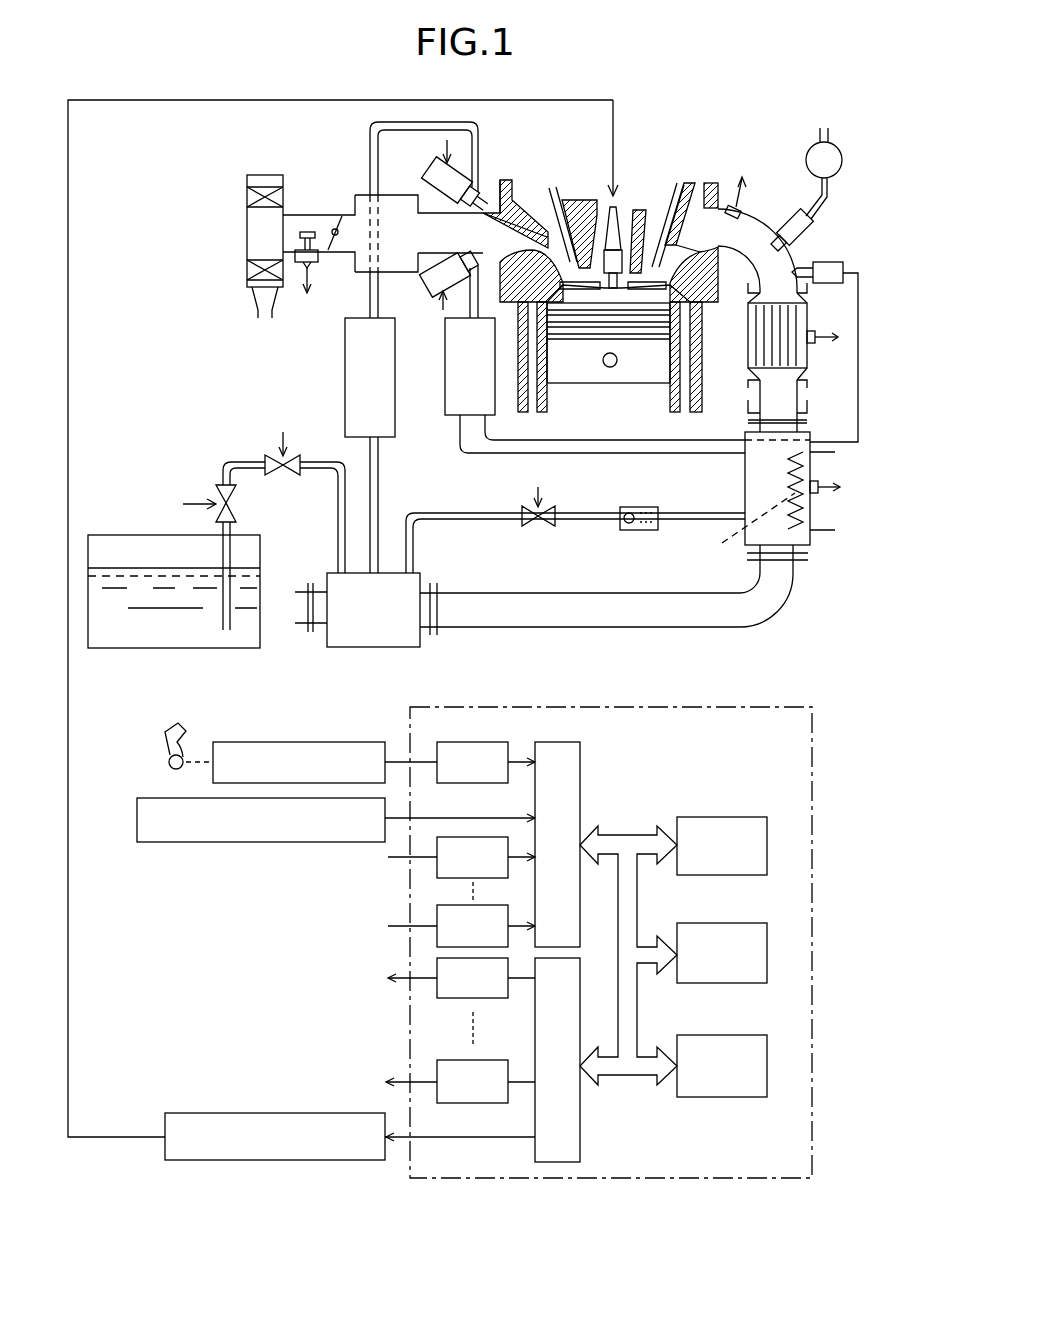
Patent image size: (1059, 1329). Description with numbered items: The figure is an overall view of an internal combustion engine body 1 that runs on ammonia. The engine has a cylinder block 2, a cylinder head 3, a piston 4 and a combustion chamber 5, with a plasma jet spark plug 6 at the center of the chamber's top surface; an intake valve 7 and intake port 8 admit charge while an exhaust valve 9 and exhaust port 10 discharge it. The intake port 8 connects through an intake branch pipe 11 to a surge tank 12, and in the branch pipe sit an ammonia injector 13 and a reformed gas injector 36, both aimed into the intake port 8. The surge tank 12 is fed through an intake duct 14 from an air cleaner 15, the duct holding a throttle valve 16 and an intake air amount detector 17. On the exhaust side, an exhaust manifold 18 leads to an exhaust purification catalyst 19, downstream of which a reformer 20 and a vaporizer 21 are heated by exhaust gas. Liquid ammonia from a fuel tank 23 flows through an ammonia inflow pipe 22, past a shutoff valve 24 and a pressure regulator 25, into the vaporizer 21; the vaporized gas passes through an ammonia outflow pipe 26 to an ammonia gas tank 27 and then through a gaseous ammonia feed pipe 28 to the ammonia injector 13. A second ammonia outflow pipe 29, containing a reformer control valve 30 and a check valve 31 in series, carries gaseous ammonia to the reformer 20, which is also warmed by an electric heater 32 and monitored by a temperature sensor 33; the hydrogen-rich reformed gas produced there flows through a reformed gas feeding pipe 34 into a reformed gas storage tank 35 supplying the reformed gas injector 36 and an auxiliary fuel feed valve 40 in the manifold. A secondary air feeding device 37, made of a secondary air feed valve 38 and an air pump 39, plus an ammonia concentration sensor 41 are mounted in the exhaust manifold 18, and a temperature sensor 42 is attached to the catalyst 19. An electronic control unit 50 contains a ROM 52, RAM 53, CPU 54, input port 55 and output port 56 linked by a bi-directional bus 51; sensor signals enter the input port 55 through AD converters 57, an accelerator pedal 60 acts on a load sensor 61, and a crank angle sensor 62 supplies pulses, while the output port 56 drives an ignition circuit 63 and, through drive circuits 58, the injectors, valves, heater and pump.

The internal combustion engine body 1 is at (493, 186).
The cylinder block 2 is at (697, 357).
The cylinder head 3 is at (706, 272).
The piston 4 is at (570, 375).
The combustion chamber 5 is at (628, 302).
The plasma jet spark plug 6 is at (619, 240).
The intake valve 7 is at (566, 240).
The intake port 8 is at (522, 232).
The exhaust valve 9 is at (652, 238).
The exhaust port 10 is at (703, 240).
The intake branch pipe 11 is at (440, 212).
The surge tank 12 is at (365, 195).
The ammonia injector 13 is at (438, 178).
The intake duct 14 is at (326, 288).
The air cleaner 15 is at (247, 283).
The throttle valve 16 is at (338, 218).
The intake air amount detector 17 is at (307, 232).
The exhaust manifold 18 is at (752, 226).
The exhaust purification catalyst 19 is at (796, 362).
The reformer 20 is at (745, 484).
The vaporizer 21 is at (388, 650).
The ammonia inflow pipe 22 is at (338, 512).
The fuel tank 23 is at (124, 533).
The shutoff valve 24 is at (236, 503).
The pressure regulator 25 is at (270, 455).
The ammonia outflow pipe 26 is at (380, 487).
The ammonia gas tank 27 is at (347, 378).
The gaseous ammonia feed pipe 28 is at (370, 128).
The ammonia outflow pipe 29 is at (465, 522).
The reformer control valve 30 is at (545, 528).
The check valve 31 is at (642, 532).
The electric heater 32 is at (742, 530).
The temperature sensor 33 is at (820, 494).
The reformed gas feeding pipe 34 is at (512, 456).
The reformed gas storage tank 35 is at (450, 368).
The reformed gas injector 36 is at (432, 283).
The secondary air feeding device 37 is at (792, 205).
The secondary air feed valve 38 is at (816, 232).
The air pump 39 is at (830, 140).
The auxiliary fuel feed valve 40 is at (826, 262).
The ammonia concentration sensor 41 is at (728, 205).
The temperature sensor 42 is at (815, 337).
The electronic control unit 50 is at (785, 704).
The bi-directional bus 51 is at (628, 845).
The ROM 52 is at (733, 817).
The RAM 53 is at (730, 923).
The CPU 54 is at (728, 1035).
The input port 55 is at (580, 762).
The output port 56 is at (580, 1142).
The AD converter 57 is at (475, 742).
The drive circuit 58 is at (437, 1070).
The accelerator pedal 60 is at (160, 752).
The load sensor 61 is at (255, 742).
The crank angle sensor 62 is at (153, 842).
The ignition circuit 63 is at (245, 1113).